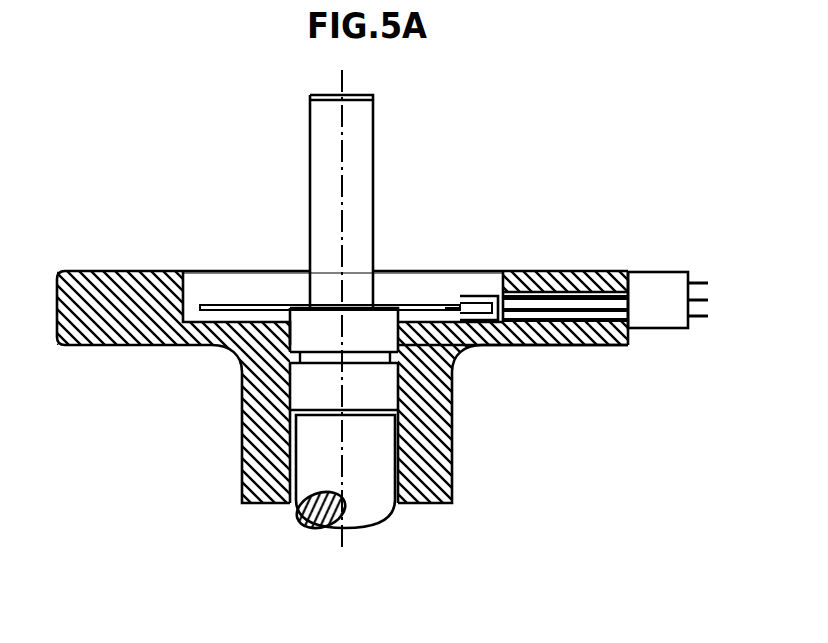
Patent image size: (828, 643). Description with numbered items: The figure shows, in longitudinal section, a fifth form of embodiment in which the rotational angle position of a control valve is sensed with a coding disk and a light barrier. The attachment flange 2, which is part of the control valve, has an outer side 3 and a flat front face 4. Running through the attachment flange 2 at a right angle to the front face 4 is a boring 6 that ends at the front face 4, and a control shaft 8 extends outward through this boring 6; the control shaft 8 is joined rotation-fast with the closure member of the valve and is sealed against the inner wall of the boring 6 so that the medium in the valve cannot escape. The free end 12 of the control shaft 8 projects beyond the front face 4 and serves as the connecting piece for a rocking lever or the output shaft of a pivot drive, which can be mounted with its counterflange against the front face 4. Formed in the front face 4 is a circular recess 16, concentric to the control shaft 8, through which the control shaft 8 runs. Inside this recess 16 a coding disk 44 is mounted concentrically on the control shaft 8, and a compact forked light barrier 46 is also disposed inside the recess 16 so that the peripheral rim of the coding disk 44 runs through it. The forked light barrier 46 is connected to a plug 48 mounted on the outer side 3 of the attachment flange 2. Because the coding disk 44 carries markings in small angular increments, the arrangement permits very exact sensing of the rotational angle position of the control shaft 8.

The attachment flange 2 is at (450, 377).
The outer side 3 is at (628, 343).
The front face 4 is at (113, 270).
The boring 6 is at (298, 502).
The control shaft 8 is at (377, 505).
The free end 12 is at (360, 150).
The recess 16 is at (282, 282).
The coding disk 44 is at (268, 305).
The forked light barrier 46 is at (478, 292).
The plug 48 is at (658, 295).